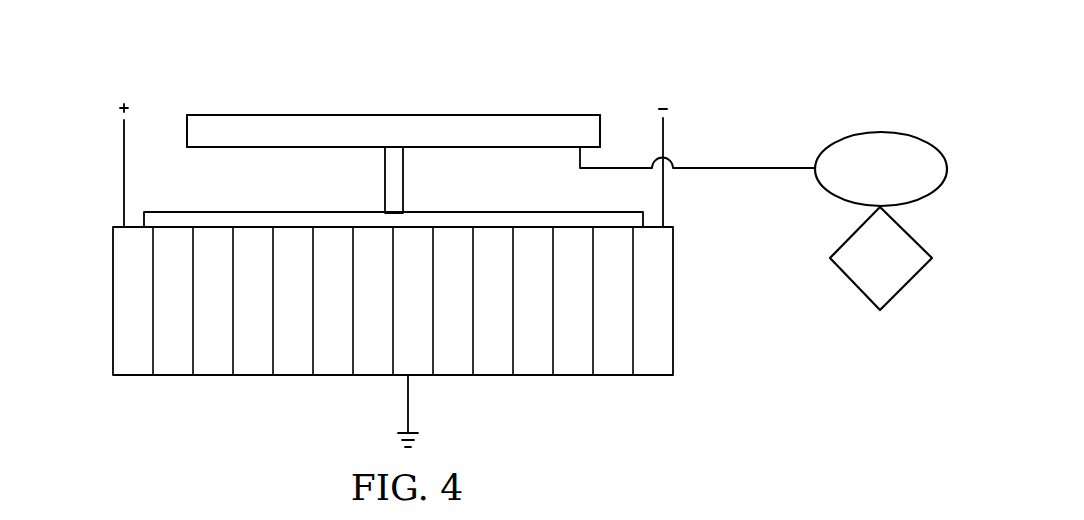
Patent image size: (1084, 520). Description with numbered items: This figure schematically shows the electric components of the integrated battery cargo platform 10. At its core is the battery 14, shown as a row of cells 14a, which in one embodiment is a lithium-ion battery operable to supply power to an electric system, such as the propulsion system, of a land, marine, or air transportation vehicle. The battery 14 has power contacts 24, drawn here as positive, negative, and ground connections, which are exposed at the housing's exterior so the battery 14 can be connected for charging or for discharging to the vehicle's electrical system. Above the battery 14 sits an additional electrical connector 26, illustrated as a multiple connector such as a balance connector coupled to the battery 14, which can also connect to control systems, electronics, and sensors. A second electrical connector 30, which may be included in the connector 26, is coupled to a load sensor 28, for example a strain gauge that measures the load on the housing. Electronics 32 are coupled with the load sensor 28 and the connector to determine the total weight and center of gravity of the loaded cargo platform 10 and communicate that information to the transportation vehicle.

The cargo platform 10 is at (191, 83).
The battery 14 is at (363, 331).
The cells 14a is at (175, 365).
The power contacts 24 is at (123, 137).
The electrical connector 26 is at (317, 113).
The load sensor 28 is at (887, 131).
The electrical connector 30 is at (512, 123).
The electronics 32 is at (908, 287).